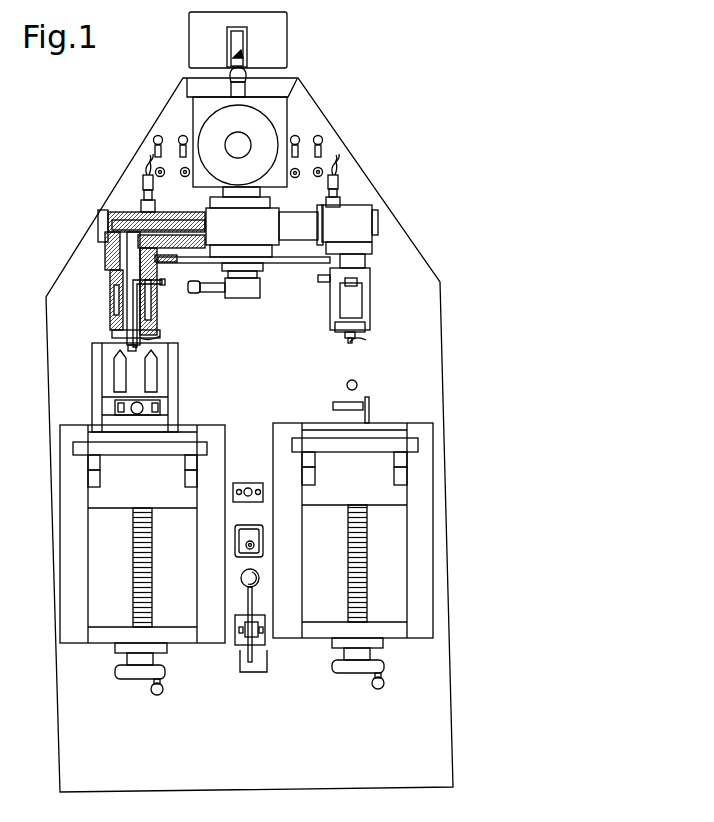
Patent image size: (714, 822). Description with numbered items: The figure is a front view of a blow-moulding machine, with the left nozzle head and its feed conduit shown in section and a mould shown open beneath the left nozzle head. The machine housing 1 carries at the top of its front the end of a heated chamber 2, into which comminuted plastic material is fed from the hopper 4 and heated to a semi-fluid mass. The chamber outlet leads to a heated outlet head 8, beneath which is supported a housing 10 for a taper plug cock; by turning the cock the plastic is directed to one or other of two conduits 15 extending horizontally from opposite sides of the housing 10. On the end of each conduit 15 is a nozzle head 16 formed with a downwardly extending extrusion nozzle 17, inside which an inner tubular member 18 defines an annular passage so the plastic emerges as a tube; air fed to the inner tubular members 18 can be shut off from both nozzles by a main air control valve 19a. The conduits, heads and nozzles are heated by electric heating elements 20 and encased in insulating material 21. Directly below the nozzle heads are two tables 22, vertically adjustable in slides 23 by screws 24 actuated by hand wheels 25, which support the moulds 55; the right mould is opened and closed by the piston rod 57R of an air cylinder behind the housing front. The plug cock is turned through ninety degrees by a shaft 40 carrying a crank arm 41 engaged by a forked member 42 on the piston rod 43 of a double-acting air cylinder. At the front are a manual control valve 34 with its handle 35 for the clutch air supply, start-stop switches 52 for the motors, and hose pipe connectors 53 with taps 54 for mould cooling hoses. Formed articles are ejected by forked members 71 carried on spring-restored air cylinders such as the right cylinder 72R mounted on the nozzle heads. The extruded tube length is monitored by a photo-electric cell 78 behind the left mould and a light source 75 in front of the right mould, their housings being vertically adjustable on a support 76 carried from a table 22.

The machine housing 1 is at (410, 247).
The heated chamber 2 is at (282, 97).
The hopper 4 is at (286, 33).
The outlet head 8 is at (222, 140).
The housing 10 is at (270, 213).
The conduit 15 is at (178, 216).
The nozzle head 16 is at (105, 212).
The extrusion nozzle 17 is at (362, 327).
The inner tubular member 18 is at (356, 335).
The main air control valve 19a is at (250, 482).
The electric heating elements 20 is at (112, 306).
The insulating material 21 is at (110, 290).
The table 22 is at (136, 455).
The slide 23 is at (63, 572).
The screw 24 is at (152, 553).
The hand wheel 25 is at (125, 680).
The manual control valve 34 is at (265, 649).
The handle 35 is at (258, 576).
The shaft 40 is at (262, 290).
The crank arm 41 is at (164, 283).
The forked member 42 is at (212, 296).
The piston rod 43 is at (196, 294).
The start-stop switches 52 is at (263, 541).
The hose pipe connectors 53 is at (160, 172).
The taps 54 is at (158, 135).
The mould 55 is at (180, 373).
The piston rod 57R is at (349, 380).
The forked member 71 is at (366, 340).
The air cylinder 72R is at (356, 292).
The light source 75 is at (368, 405).
The support 76 is at (369, 398).
The photo-electric cell 78 is at (150, 408).